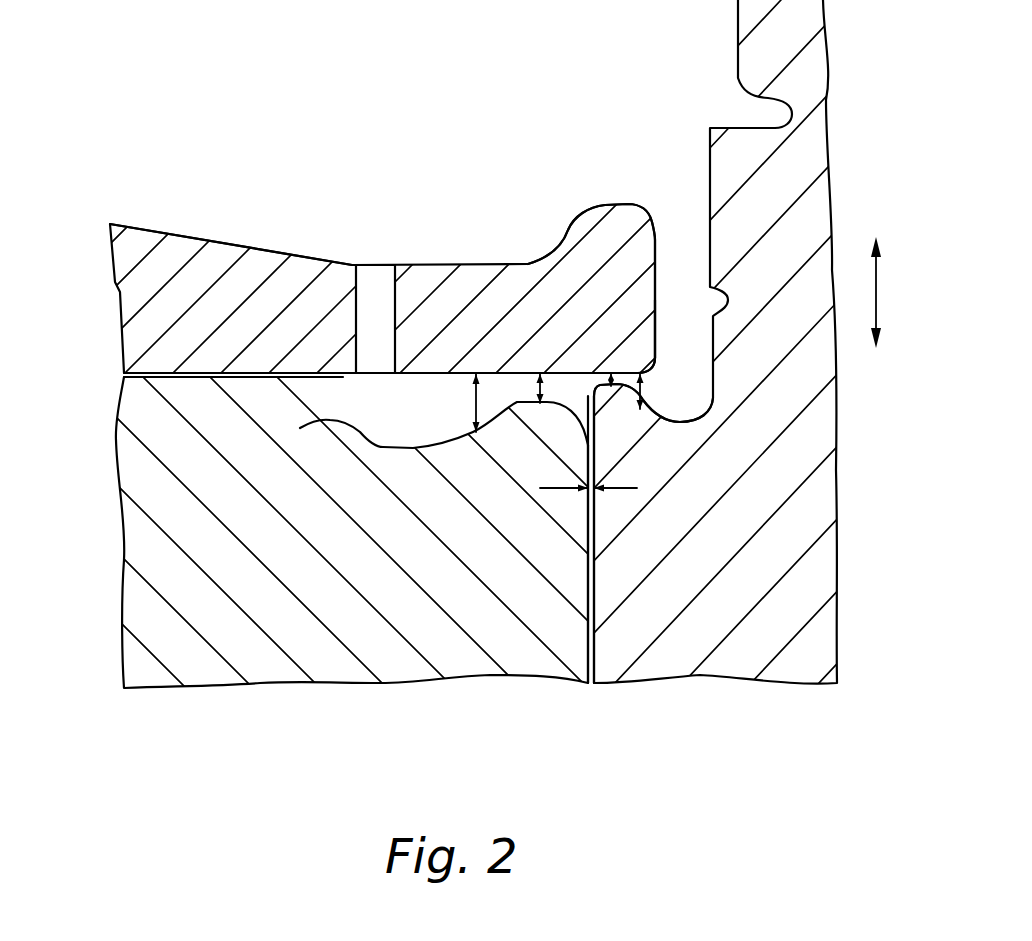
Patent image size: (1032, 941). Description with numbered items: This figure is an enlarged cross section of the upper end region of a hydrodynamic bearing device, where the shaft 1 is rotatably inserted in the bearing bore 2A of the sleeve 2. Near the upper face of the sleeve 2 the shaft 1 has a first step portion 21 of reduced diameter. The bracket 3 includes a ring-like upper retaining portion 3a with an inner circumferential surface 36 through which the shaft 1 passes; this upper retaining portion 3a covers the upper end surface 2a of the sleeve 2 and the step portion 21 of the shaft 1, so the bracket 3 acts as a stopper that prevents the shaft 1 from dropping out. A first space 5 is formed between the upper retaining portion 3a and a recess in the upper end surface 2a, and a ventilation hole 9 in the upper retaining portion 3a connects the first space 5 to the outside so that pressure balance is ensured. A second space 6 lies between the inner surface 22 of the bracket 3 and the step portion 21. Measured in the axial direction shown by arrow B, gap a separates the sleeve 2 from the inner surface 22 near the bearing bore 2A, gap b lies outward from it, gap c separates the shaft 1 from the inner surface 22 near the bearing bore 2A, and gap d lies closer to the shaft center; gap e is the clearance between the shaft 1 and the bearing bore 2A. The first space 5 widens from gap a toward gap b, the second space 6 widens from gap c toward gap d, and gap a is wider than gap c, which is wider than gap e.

The shaft 1 is at (543, 366).
The sleeve 2 is at (431, 565).
The bearing bore 2A is at (594, 573).
The upper end surface 2a is at (300, 428).
The bracket 3 is at (409, 309).
The upper retaining portion 3a is at (215, 265).
The first space 5 is at (463, 415).
The second space 6 is at (653, 390).
The ventilation hole 9 is at (372, 280).
The first step portion 21 is at (677, 420).
The inner surface 22 is at (571, 374).
The inner circumferential surface 36 is at (655, 290).
The gap a is at (538, 374).
The gap b is at (474, 374).
The gap c is at (610, 373).
The gap d is at (640, 372).
The gap e is at (594, 500).
The arrow B is at (878, 293).